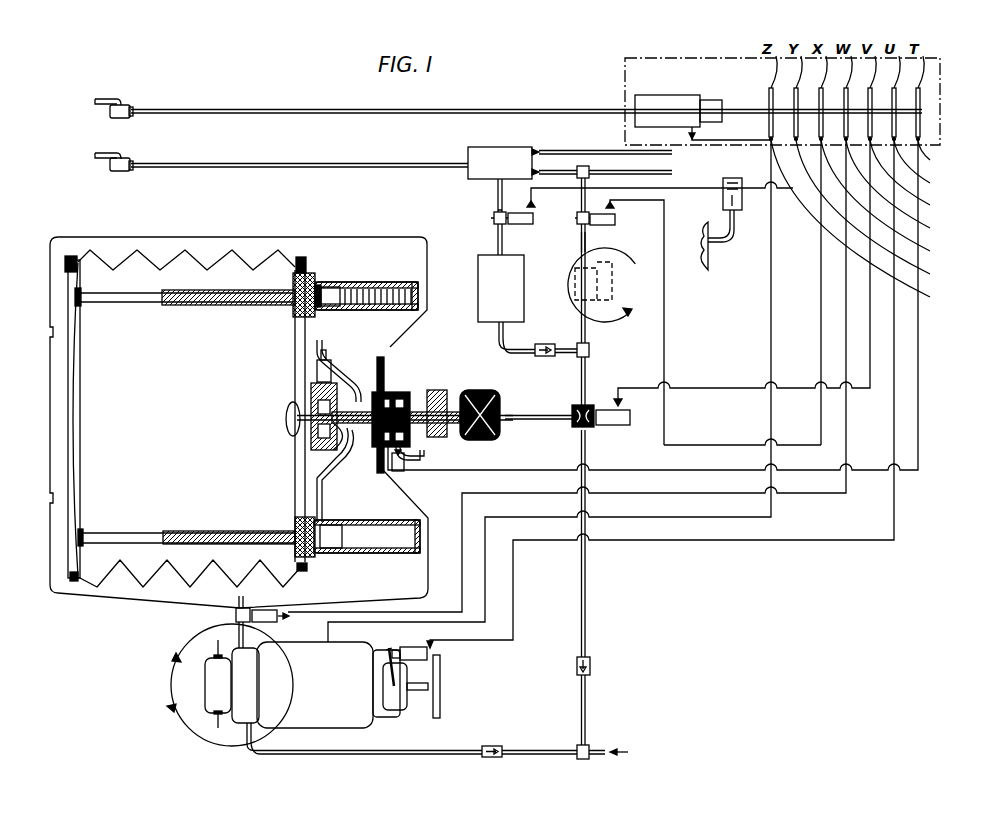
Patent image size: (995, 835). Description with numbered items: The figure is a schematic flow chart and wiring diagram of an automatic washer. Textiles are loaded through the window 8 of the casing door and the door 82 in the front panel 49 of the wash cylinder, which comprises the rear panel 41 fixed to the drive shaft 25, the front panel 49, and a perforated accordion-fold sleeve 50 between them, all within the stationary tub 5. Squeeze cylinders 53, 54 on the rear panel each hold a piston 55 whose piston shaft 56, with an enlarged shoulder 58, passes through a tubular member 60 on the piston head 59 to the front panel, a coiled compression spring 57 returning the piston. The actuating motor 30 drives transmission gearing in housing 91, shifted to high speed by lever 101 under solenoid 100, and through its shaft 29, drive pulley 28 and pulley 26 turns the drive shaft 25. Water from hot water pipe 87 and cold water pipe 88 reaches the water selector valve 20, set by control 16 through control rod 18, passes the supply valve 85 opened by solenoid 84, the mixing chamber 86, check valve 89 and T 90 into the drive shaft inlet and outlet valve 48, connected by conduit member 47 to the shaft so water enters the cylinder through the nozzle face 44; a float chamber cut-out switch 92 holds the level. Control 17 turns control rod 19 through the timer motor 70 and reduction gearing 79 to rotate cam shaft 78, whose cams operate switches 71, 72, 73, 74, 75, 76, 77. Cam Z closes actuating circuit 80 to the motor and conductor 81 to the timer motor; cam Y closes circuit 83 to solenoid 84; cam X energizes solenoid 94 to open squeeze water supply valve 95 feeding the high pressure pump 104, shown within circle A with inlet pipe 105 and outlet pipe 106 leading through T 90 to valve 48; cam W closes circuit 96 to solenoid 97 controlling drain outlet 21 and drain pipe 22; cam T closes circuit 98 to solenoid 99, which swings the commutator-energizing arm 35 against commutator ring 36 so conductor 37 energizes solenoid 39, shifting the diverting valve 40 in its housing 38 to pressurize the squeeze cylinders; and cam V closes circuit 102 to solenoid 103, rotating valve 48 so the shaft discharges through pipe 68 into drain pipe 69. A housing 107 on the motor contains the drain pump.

The stationary tub 5 is at (710, 258).
The window 8 is at (50, 390).
The control 16 is at (104, 153).
The control 17 is at (104, 99).
The control rod 18 is at (204, 163).
The control rod 19 is at (228, 108).
The water selector valve 20 is at (489, 157).
The drain outlet 21 is at (236, 612).
The drain pipe 22 is at (238, 636).
The drive shaft 25 is at (464, 395).
The pulley 26 is at (438, 392).
The drive pulley 28 is at (440, 669).
The motor shaft 29 is at (413, 690).
The actuating motor 30 is at (620, 267).
The commutator-energizing pivoted arm 35 is at (422, 452).
The commutator ring 36 is at (405, 405).
The electrical conducting wire 37 is at (334, 368).
The diverting valve housing 38 is at (330, 448).
The solenoid 39 is at (317, 373).
The diverting valve 40 is at (311, 395).
The rear panel 41 is at (295, 346).
The nozzle face 44 is at (286, 419).
The conduit member 47 is at (527, 413).
The drive shaft inlet and outlet valve 48 is at (572, 428).
The front panel 49 is at (75, 317).
The flexible accordion-fold-type sleeve 50 is at (193, 254).
The squeeze cylinder 53 is at (361, 289).
The squeeze cylinder 54 is at (375, 555).
The piston 55 is at (330, 287).
The piston shaft 56 is at (140, 300).
The coiled compression spring 57 is at (389, 289).
The enlarged shoulder 58 is at (319, 295).
The piston head 59 is at (291, 305).
The tubular member 60 is at (206, 293).
The discharge pipe 68 is at (587, 585).
The drain pipe 69 is at (604, 750).
The timer motor 70 is at (656, 97).
The electrical switch 71 is at (935, 130).
The electrical switch 72 is at (923, 141).
The electrical switch 73 is at (911, 152).
The electrical switch 74 is at (899, 164).
The electrical switch 75 is at (887, 175).
The electrical switch 76 is at (874, 187).
The electrical switch 77 is at (862, 198).
The cam shaft 78 is at (936, 110).
The reduction gearing 79 is at (710, 99).
The actuating circuit 80 is at (771, 289).
The conductor 81 is at (718, 143).
The door 82 is at (78, 386).
The circuit 83 is at (697, 190).
The solenoid 84 is at (521, 224).
The wash and rinse water supply valve 85 is at (494, 218).
The water mixing chamber 86 is at (478, 291).
The hot water pipe 87 is at (578, 151).
The cold water pipe 88 is at (663, 173).
The check valve 89 is at (545, 344).
The T 90 is at (590, 351).
The transmission gearing housing 91 is at (392, 712).
The float chamber cut-out switch 92 is at (733, 178).
The solenoid 94 is at (616, 218).
The squeeze water supply valve 95 is at (576, 217).
The circuit 96 is at (848, 421).
The solenoid 97 is at (280, 618).
The circuit 98 is at (919, 421).
The solenoid 99 is at (897, 509).
The solenoid 100 is at (428, 654).
The lever 101 is at (389, 672).
The circuit 102 is at (714, 388).
The solenoid 103 is at (618, 425).
The high pressure pump 104 is at (575, 286).
The inlet pipe 105 is at (580, 243).
The outlet pipe 106 is at (588, 326).
The drain pump housing 107 is at (601, 262).